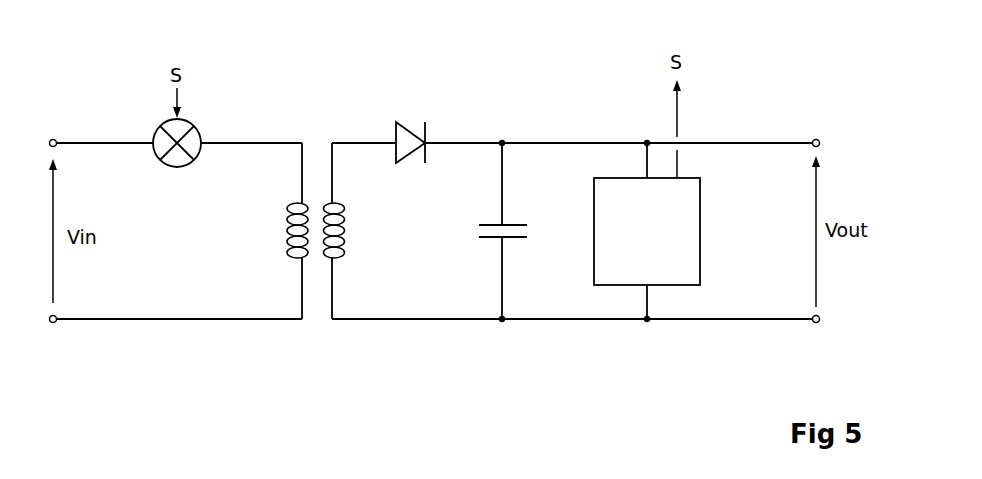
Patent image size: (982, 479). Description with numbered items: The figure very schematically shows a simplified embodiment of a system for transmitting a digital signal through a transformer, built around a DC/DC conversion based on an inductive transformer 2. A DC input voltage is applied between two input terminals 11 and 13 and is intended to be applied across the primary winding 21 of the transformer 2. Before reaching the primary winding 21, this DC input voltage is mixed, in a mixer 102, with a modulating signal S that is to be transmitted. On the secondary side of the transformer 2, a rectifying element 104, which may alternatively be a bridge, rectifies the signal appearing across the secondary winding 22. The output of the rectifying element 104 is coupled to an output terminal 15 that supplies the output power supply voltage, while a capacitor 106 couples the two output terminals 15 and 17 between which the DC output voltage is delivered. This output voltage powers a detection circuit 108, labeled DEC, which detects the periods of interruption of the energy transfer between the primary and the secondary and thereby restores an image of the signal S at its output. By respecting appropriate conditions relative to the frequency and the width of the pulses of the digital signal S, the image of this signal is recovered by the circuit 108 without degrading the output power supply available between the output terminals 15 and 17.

The inductive transformer 2 is at (315, 162).
The input terminal 11 is at (54, 139).
The input terminal 13 is at (53, 323).
The output terminal 15 is at (816, 139).
The output terminal 17 is at (820, 319).
The primary winding 21 is at (291, 204).
The secondary winding 22 is at (335, 204).
The mixer 102 is at (199, 130).
The rectifying element 104 is at (410, 128).
The capacitor 106 is at (491, 239).
The detection circuit 108 is at (594, 253).